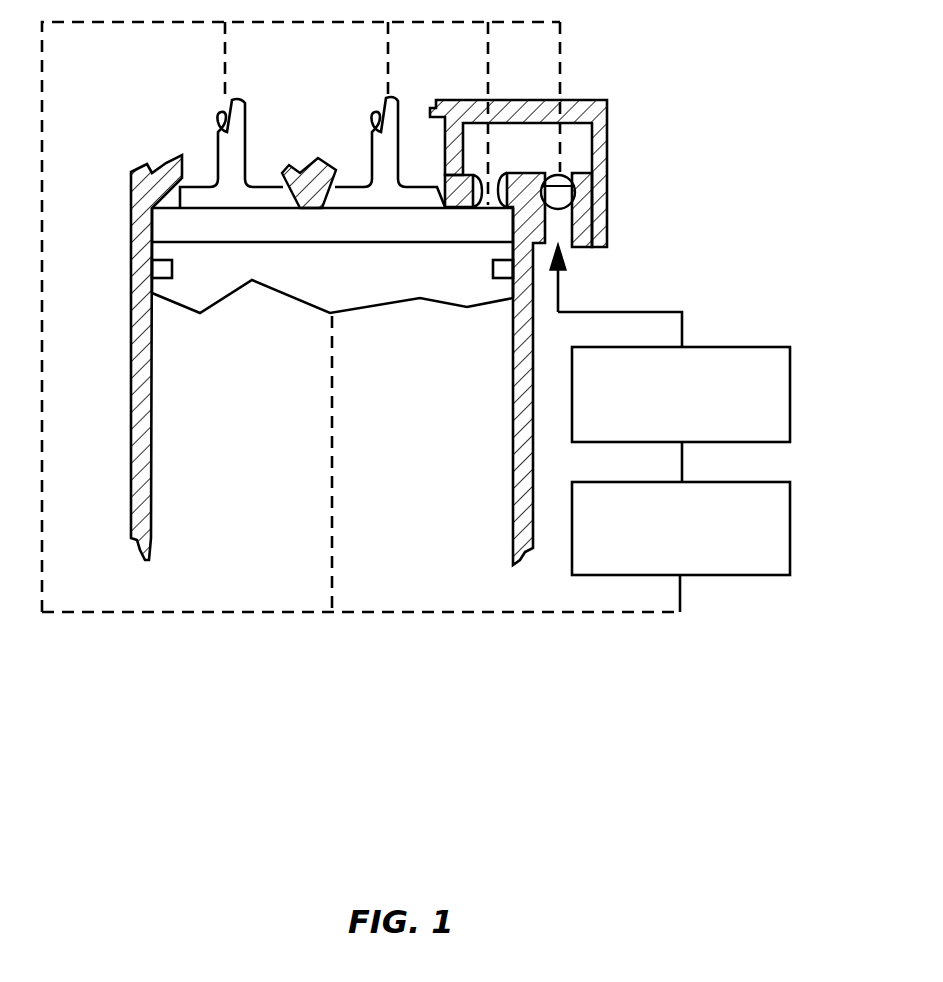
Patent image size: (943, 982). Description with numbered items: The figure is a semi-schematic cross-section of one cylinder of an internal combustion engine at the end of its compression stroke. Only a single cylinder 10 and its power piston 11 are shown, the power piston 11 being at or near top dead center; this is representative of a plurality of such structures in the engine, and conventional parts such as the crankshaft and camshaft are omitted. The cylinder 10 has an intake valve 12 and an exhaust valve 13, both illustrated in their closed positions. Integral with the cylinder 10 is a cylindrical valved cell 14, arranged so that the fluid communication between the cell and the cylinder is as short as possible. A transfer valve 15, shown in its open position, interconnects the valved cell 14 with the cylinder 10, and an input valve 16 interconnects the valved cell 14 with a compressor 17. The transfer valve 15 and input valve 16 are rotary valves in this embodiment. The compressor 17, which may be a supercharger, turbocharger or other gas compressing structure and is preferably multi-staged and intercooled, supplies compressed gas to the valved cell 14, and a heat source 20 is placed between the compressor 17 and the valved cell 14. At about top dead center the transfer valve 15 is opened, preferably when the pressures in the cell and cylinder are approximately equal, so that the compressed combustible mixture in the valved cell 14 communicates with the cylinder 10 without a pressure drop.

The cylinder 10 is at (131, 394).
The power piston 11 is at (317, 303).
The intake valve 12 is at (217, 130).
The exhaust valve 13 is at (372, 130).
The valved cell 14 is at (590, 148).
The transfer valve 15 is at (488, 204).
The input valve 16 is at (560, 205).
The compressor 17 is at (762, 492).
The heat source 20 is at (778, 372).